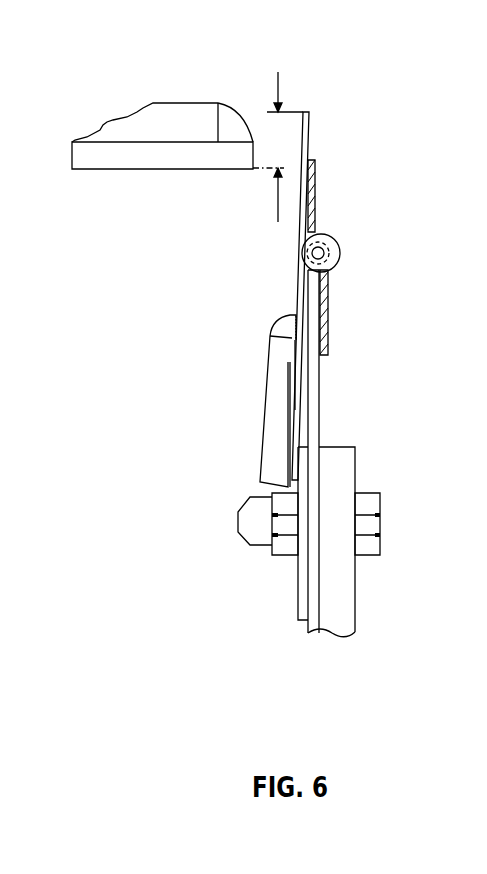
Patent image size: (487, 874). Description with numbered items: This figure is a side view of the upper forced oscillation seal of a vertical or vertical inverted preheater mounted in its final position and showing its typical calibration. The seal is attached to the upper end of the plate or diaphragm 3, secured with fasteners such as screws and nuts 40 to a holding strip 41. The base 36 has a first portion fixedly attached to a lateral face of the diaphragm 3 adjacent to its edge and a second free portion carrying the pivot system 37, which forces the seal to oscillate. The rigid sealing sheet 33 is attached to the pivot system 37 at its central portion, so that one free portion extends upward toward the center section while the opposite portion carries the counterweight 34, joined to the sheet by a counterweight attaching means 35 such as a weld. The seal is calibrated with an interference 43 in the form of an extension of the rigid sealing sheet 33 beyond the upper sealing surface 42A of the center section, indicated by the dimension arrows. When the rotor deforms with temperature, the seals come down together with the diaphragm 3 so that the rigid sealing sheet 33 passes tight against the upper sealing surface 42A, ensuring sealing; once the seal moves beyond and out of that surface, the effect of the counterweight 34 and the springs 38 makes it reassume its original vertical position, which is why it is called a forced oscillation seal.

The diaphragm 3 is at (355, 592).
The rigid sealing sheet 33 is at (309, 112).
The counterweight 34 is at (275, 423).
The counterweight attaching means 35 is at (275, 327).
The base 36 is at (319, 373).
The pivot system 37 is at (306, 253).
The springs 38 is at (315, 223).
The screws and nuts 40 is at (382, 525).
The holding strip 41 is at (298, 605).
The upper sealing surface 42A is at (195, 169).
The interference 43 is at (273, 137).